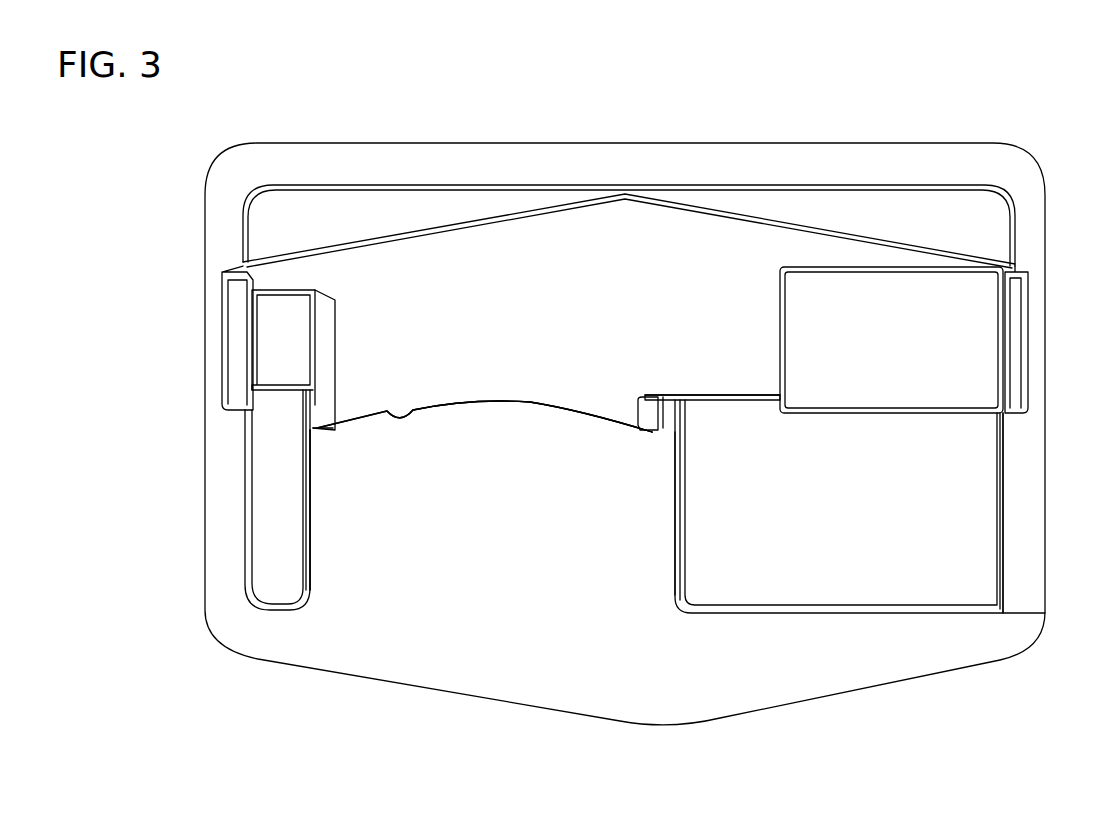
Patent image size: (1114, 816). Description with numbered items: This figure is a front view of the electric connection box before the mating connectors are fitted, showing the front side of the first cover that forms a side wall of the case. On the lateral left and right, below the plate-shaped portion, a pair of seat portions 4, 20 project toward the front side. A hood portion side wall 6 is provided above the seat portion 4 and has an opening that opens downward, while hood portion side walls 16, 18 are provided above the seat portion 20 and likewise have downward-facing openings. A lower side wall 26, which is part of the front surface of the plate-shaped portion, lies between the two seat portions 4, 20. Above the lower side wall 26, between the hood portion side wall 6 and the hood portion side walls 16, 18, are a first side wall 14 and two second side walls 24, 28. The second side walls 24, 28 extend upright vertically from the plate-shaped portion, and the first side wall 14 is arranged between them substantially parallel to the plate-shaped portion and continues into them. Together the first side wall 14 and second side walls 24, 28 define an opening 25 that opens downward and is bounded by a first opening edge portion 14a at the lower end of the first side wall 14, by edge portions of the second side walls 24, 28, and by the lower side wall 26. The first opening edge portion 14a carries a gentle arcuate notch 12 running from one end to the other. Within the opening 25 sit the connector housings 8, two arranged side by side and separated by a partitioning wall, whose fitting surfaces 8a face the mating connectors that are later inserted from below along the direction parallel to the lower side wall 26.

The seat portion 4 is at (268, 537).
The hood portion side wall 6 is at (285, 317).
The connector housing 8 is at (432, 428).
The fitting surface 8a is at (497, 405).
The arcuate notch 12 is at (388, 411).
The first side wall 14 is at (536, 268).
The first opening edge portion 14a is at (583, 412).
The hood portion side wall 16 is at (765, 303).
The hood portion side wall 18 is at (931, 300).
The seat portion 20 is at (965, 513).
The second side wall 24 is at (685, 417).
The opening 25 is at (655, 425).
The lower side wall 26 is at (352, 540).
The second side wall 28 is at (305, 403).